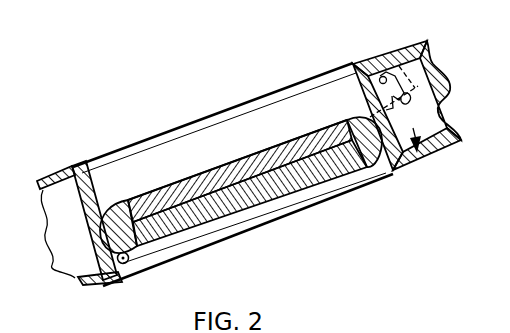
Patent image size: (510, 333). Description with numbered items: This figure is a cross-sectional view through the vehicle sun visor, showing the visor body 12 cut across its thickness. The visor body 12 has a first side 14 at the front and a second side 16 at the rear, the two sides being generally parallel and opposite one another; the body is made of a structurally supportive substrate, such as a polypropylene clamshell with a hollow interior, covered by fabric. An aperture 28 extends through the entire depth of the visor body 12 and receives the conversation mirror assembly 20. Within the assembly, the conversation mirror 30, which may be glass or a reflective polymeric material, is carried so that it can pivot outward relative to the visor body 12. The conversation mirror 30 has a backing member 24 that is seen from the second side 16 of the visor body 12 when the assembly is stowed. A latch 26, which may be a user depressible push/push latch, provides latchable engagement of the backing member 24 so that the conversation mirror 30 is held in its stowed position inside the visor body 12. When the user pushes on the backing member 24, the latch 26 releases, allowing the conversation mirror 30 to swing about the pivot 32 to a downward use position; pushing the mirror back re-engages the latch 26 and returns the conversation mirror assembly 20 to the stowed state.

The visor body 12 is at (118, 147).
The first side 14 is at (447, 160).
The second side 16 is at (395, 53).
The conversation mirror assembly 20 is at (319, 103).
The backing member 24 is at (268, 203).
The latch 26 is at (415, 172).
The aperture 28 is at (228, 137).
The conversation mirror 30 is at (200, 177).
The pivot 32 is at (130, 262).